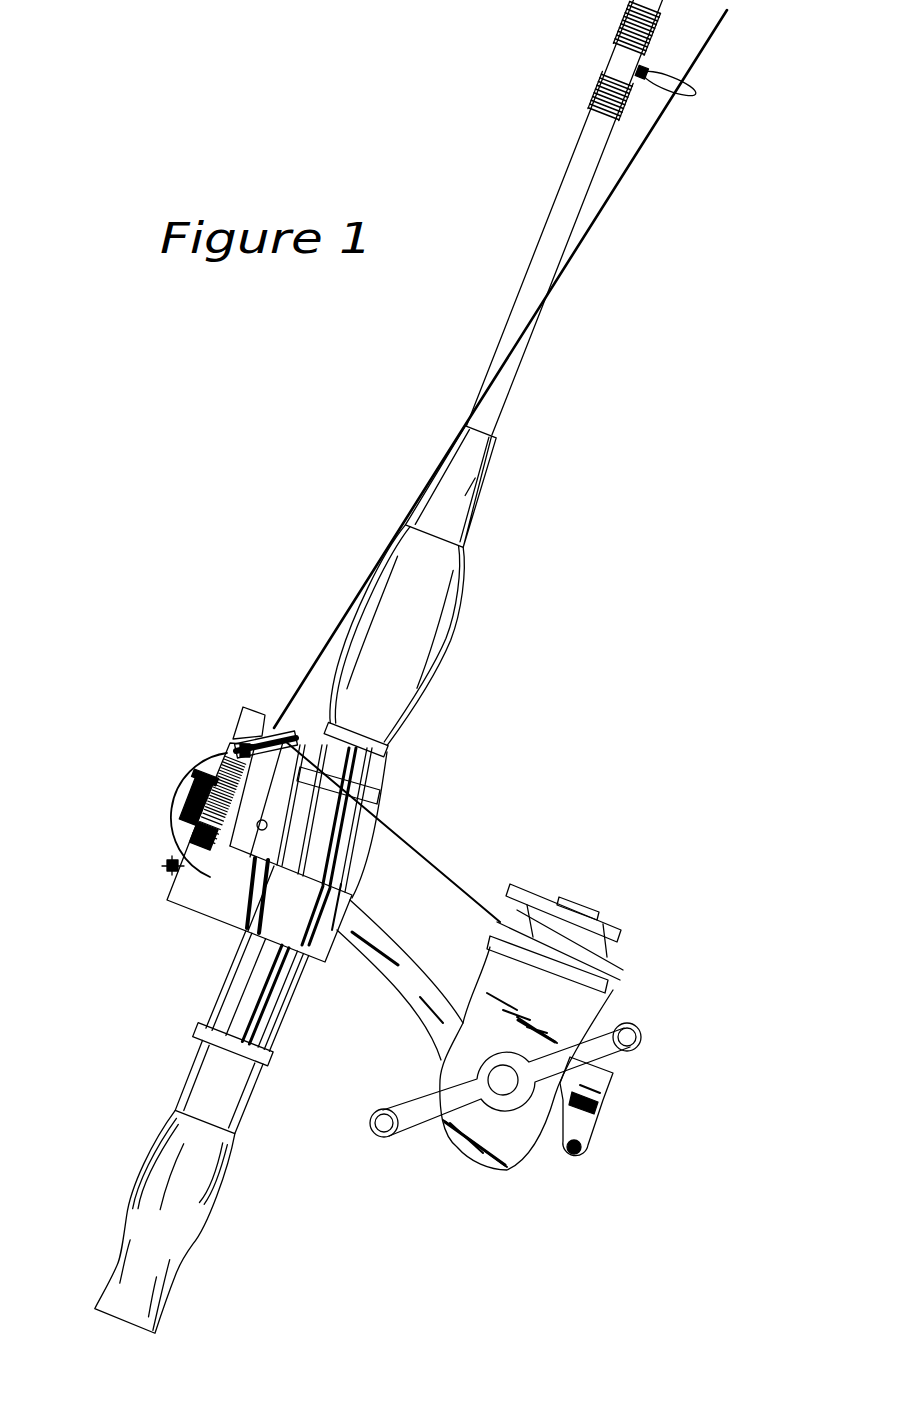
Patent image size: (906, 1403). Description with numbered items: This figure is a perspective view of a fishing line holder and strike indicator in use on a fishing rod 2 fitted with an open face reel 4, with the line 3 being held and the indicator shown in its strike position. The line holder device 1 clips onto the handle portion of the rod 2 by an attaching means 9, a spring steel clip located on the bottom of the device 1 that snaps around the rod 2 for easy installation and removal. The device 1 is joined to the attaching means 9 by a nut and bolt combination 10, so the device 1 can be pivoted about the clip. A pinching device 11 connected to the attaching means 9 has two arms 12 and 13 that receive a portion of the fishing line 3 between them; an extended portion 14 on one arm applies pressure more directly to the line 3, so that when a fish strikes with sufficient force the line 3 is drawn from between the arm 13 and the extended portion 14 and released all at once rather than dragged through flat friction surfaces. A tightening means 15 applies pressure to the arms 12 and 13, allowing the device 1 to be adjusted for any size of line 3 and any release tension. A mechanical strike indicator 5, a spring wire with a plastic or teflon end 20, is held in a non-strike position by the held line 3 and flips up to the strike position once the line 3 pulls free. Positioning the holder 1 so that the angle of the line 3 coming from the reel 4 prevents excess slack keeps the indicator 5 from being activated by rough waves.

The line holder device 1 is at (192, 888).
The fishing rod 2 is at (222, 1182).
The fishing line 3 is at (376, 560).
The reel 4 is at (487, 1162).
The strike indicator 5 is at (189, 800).
The attaching means 9 is at (328, 948).
The nut and bolt combination 10 is at (172, 872).
The pinching device 11 is at (212, 920).
The arm 12 is at (247, 706).
The arm 13 is at (273, 727).
The extended portion 14 is at (272, 728).
The tightening means 15 is at (182, 798).
The plastic or teflon end 20 is at (246, 744).